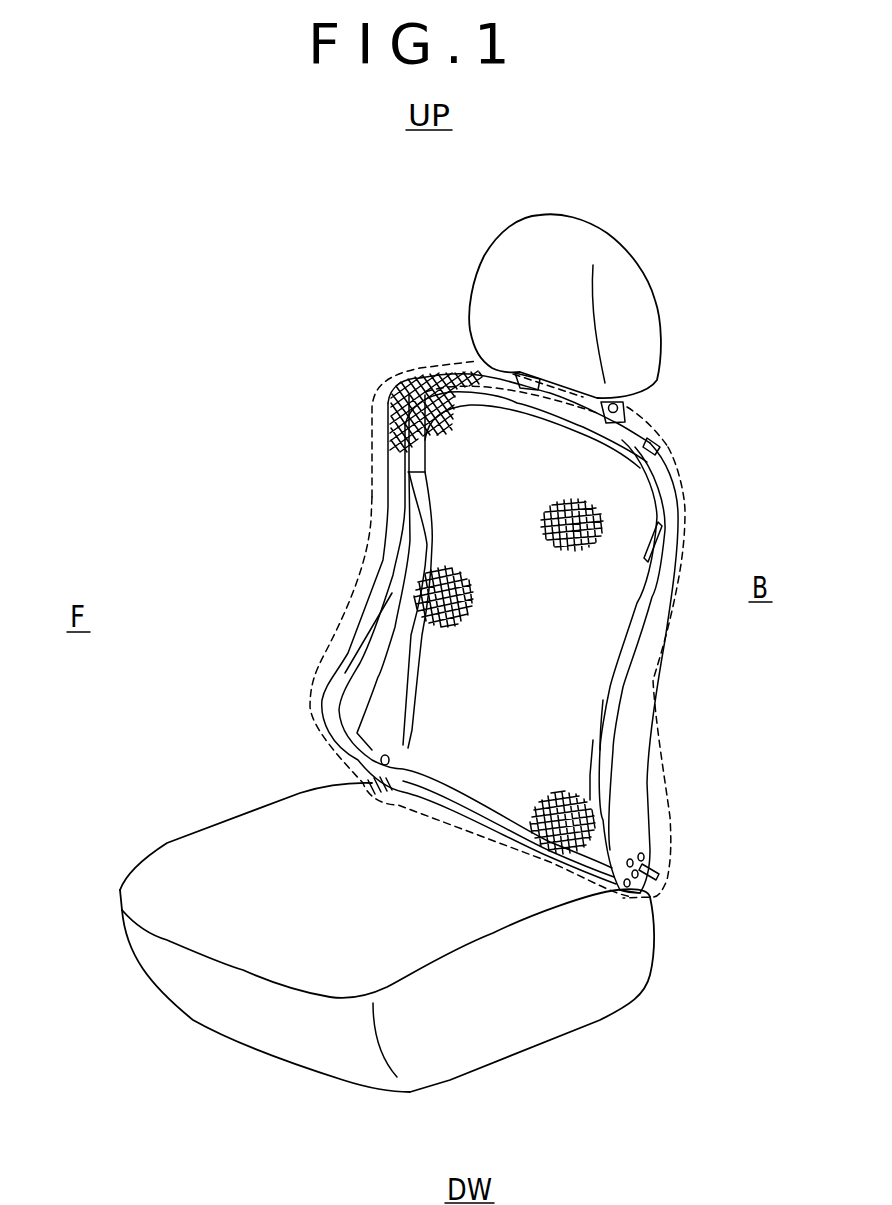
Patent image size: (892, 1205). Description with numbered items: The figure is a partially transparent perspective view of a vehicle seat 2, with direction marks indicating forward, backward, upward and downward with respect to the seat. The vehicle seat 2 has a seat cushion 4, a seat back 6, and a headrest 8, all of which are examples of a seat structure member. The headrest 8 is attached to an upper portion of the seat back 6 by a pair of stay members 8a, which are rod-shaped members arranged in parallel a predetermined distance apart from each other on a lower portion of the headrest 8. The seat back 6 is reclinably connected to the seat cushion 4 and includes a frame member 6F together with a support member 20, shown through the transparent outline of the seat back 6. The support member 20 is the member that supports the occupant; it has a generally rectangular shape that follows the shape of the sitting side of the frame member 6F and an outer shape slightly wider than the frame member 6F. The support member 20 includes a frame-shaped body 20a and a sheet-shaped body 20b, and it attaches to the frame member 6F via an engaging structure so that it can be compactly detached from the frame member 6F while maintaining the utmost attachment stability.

The vehicle seat 2 is at (630, 224).
The seat cushion 4 is at (231, 811).
The seat back 6 is at (382, 554).
The frame member 6F is at (630, 710).
The headrest 8 is at (468, 297).
The stay members 8a is at (486, 366).
The support member 20 is at (742, 727).
The frame-shaped body 20a is at (603, 750).
The sheet-shaped body 20b is at (590, 775).